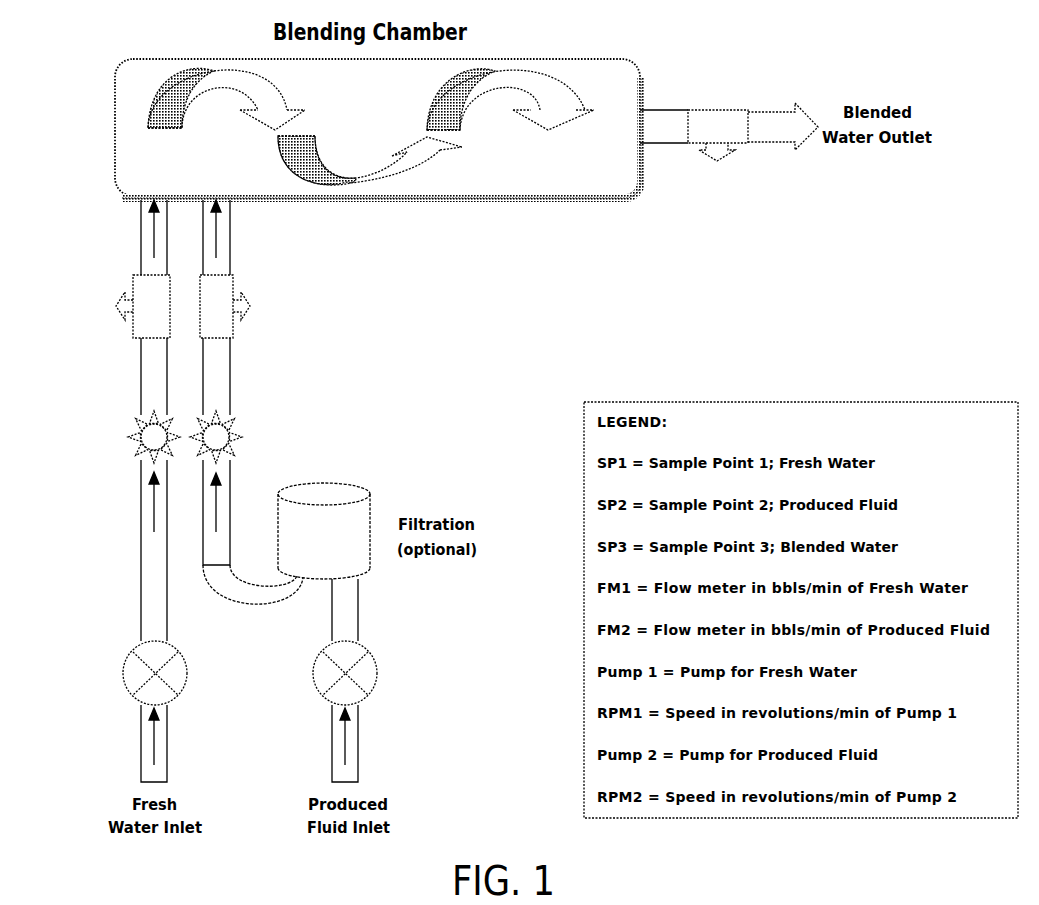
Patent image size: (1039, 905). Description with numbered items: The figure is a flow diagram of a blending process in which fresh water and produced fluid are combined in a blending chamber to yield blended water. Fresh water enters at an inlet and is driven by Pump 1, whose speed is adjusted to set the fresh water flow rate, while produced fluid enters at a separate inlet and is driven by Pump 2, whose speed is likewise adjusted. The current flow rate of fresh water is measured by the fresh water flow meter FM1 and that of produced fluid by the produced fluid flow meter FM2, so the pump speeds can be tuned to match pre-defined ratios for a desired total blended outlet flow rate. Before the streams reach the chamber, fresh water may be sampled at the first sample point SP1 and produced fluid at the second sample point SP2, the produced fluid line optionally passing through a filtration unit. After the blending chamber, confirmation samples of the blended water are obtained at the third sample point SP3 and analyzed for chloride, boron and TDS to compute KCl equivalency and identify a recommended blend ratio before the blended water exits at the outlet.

The Sample Point 1 SP1 is at (114, 306).
The Sample Point 2 SP2 is at (250, 306).
The Sample Point 3 SP3 is at (718, 149).
The Flow Meter 1 FM1 is at (123, 437).
The Flow Meter 2 FM2 is at (239, 437).
The element Pump 1 is at (108, 673).
The element Pump 2 is at (390, 673).